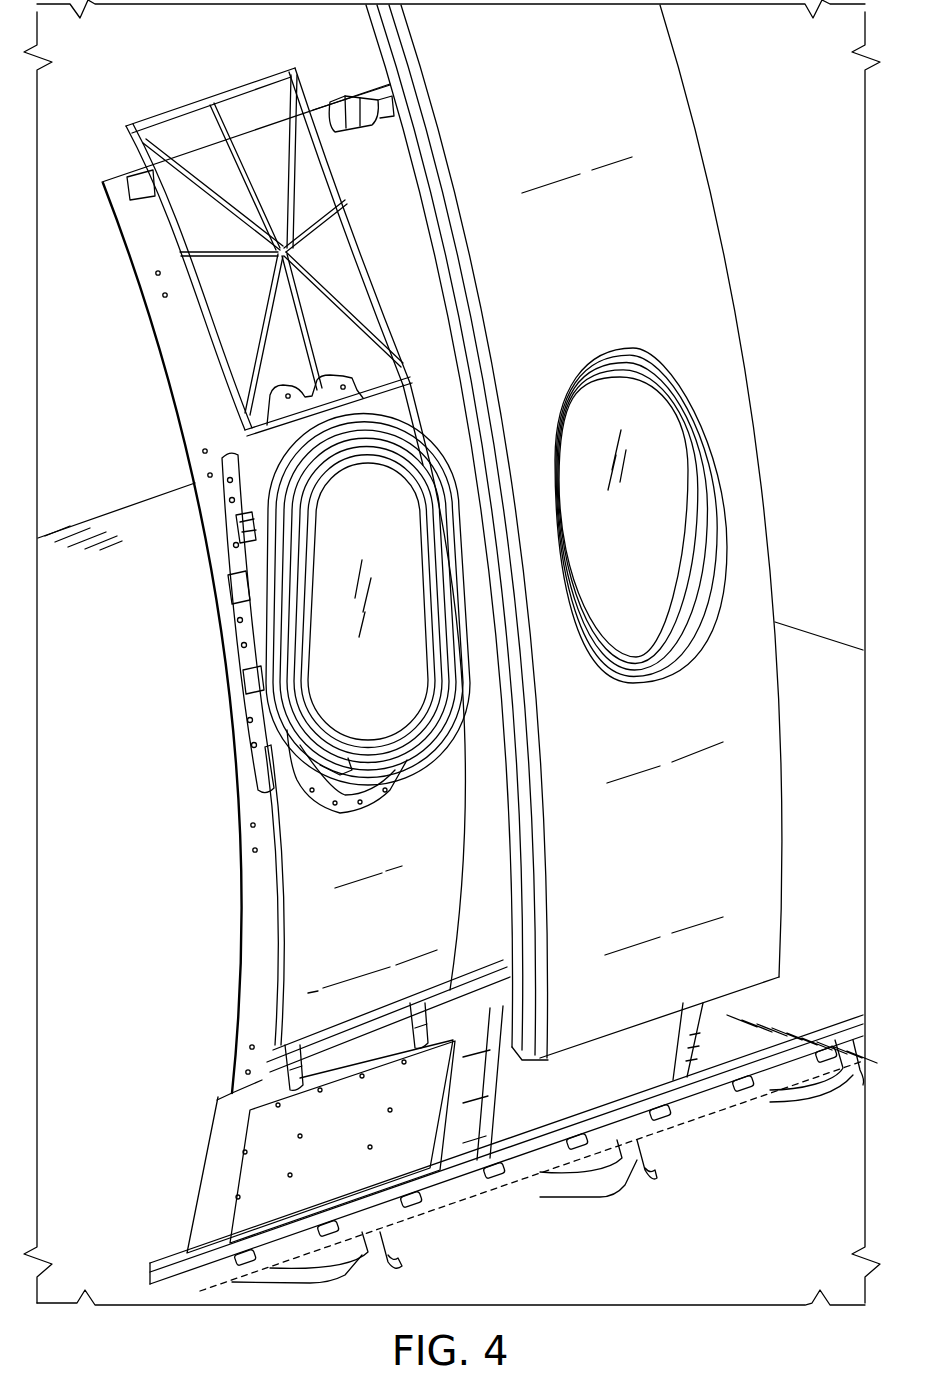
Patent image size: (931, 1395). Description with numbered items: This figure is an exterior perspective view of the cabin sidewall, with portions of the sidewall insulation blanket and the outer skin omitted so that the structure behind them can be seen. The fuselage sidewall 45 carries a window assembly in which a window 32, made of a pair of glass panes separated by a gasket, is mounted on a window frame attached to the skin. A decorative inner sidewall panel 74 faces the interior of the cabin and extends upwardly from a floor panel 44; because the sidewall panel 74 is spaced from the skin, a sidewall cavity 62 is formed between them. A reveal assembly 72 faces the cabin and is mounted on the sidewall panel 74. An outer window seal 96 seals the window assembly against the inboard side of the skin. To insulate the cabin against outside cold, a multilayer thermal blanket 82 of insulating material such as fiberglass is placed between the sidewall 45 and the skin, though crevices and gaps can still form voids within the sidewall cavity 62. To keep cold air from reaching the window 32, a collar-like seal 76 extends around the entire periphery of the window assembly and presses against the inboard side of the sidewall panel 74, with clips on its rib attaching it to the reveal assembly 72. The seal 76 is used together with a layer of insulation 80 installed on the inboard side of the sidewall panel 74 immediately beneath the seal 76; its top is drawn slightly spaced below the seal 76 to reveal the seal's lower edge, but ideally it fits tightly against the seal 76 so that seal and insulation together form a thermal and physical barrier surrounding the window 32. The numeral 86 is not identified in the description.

The window 32 is at (412, 598).
The floor panel 44 is at (812, 643).
The fuselage sidewall 45 is at (98, 148).
The sidewall cavity 62 is at (350, 72).
The reveal assembly 72 is at (238, 607).
The inner sidewall panel 74 is at (158, 341).
The seal 76 is at (235, 522).
The insulation 80 is at (282, 978).
The thermal blanket 82 is at (685, 148).
The support frame 86 is at (195, 105).
The outer window seal 96 is at (388, 753).